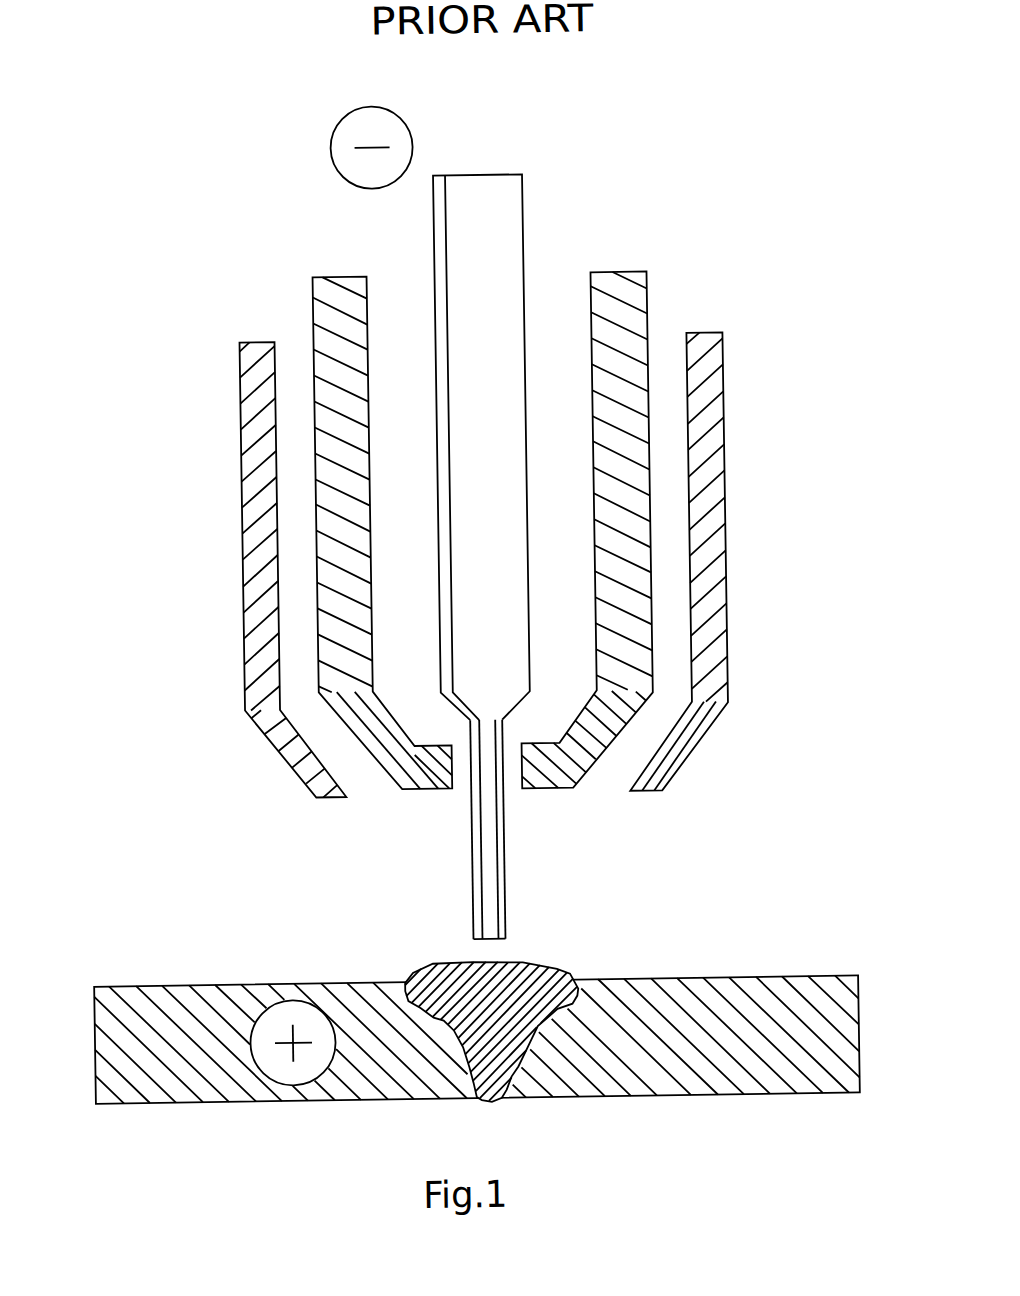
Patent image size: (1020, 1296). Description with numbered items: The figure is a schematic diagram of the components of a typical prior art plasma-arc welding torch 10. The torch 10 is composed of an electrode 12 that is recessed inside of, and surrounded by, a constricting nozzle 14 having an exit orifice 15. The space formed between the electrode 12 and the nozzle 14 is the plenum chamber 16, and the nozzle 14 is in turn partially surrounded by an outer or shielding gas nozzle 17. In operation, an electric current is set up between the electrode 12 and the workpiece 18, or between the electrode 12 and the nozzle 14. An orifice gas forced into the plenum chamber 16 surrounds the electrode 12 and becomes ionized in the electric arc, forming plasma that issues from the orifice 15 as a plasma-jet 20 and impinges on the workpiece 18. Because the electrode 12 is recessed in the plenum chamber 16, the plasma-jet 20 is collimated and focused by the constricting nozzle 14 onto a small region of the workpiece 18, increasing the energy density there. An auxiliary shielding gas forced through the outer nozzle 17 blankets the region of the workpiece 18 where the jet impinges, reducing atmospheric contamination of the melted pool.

The plasma-arc welding torch 10 is at (247, 376).
The electrode 12 is at (448, 264).
The constricting nozzle 14 is at (652, 326).
The exit orifice 15 is at (375, 603).
The plenum chamber 16 is at (640, 427).
The outer or shielding gas nozzle 17 is at (721, 699).
The workpiece 18 is at (475, 946).
The plasma-jet 20 is at (488, 883).